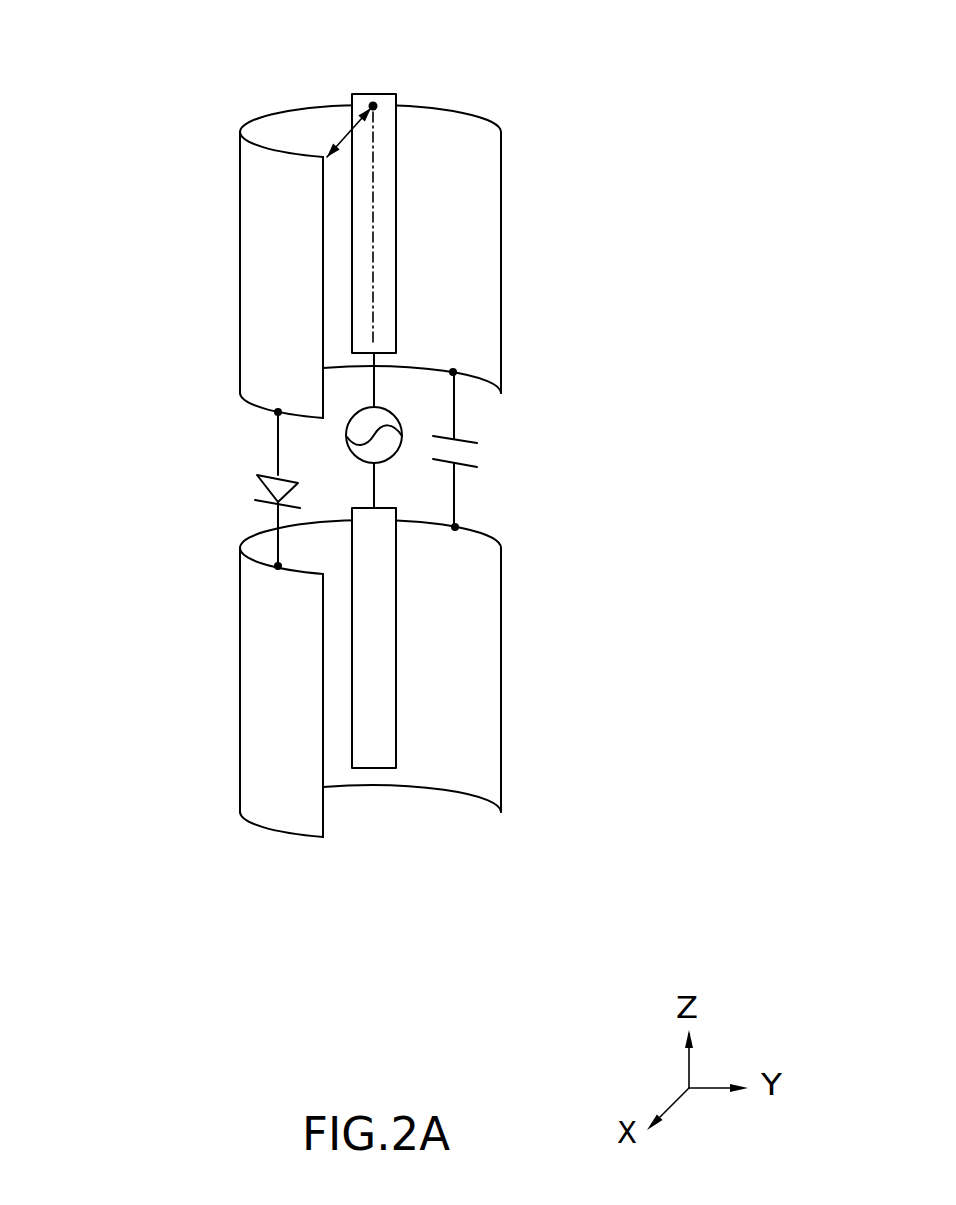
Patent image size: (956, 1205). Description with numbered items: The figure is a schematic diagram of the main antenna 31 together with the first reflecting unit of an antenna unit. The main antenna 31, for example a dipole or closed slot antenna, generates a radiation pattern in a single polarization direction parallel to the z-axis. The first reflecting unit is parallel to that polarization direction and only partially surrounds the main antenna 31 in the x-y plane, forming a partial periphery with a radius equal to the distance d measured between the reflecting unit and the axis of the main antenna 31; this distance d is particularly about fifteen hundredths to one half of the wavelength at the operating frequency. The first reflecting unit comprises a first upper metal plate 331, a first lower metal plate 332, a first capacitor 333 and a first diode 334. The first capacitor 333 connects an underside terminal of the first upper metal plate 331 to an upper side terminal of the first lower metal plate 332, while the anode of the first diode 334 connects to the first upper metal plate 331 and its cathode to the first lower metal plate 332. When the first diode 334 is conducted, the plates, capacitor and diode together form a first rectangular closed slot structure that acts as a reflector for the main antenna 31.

The main antenna 31 is at (373, 94).
The first upper metal plate 331 is at (501, 213).
The first lower metal plate 332 is at (501, 719).
The first capacitor 333 is at (480, 443).
The first diode 334 is at (253, 487).
The distance d is at (344, 136).